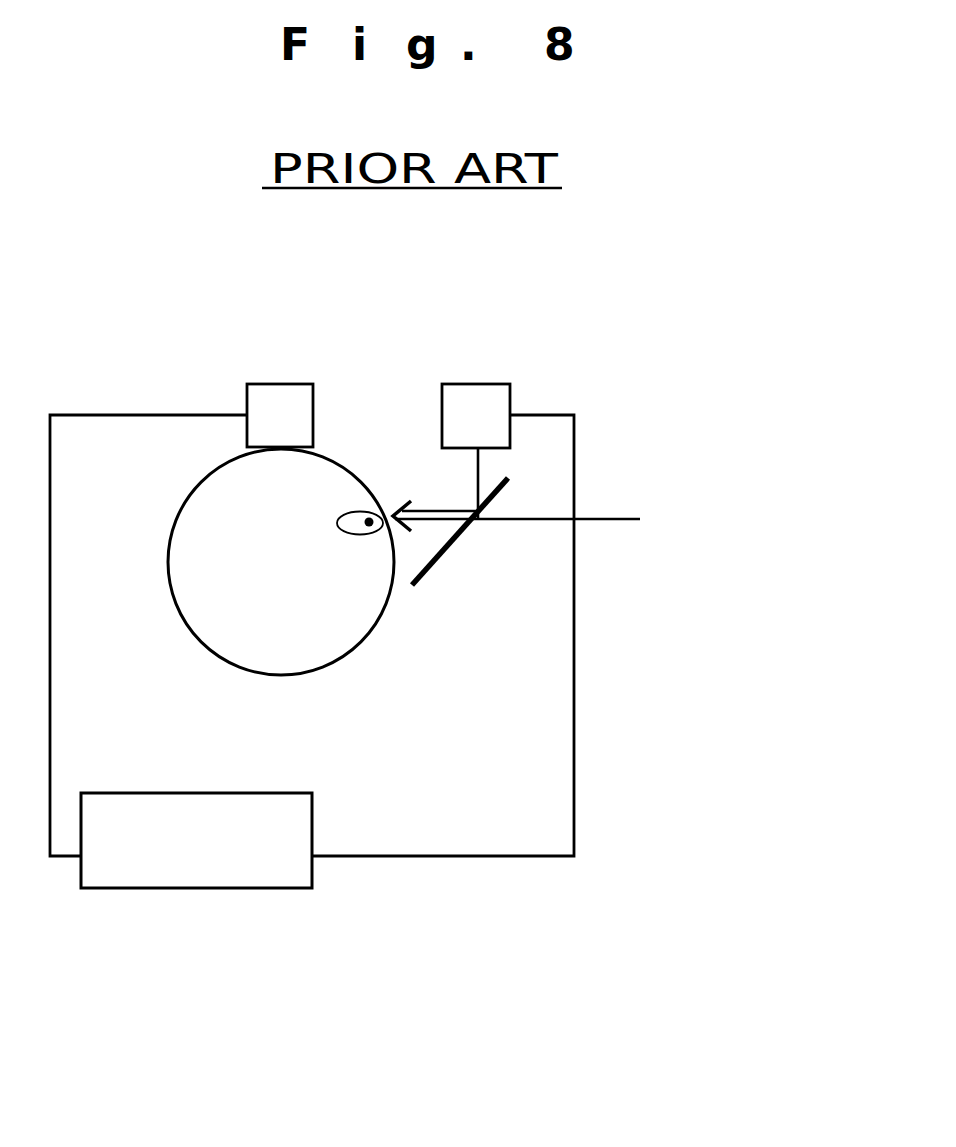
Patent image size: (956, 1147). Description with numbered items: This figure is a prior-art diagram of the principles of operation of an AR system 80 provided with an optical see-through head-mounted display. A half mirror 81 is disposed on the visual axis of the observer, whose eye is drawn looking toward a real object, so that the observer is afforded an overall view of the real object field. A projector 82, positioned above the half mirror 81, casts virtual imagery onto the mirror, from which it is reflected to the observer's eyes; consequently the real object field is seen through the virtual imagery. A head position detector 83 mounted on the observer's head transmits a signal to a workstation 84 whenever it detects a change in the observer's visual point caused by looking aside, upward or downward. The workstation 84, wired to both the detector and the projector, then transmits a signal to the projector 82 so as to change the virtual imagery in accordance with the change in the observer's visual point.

The AR system 80 is at (168, 282).
The half mirror 81 is at (423, 578).
The projector 82 is at (472, 384).
The head position detector 83 is at (277, 384).
The workstation 84 is at (193, 888).